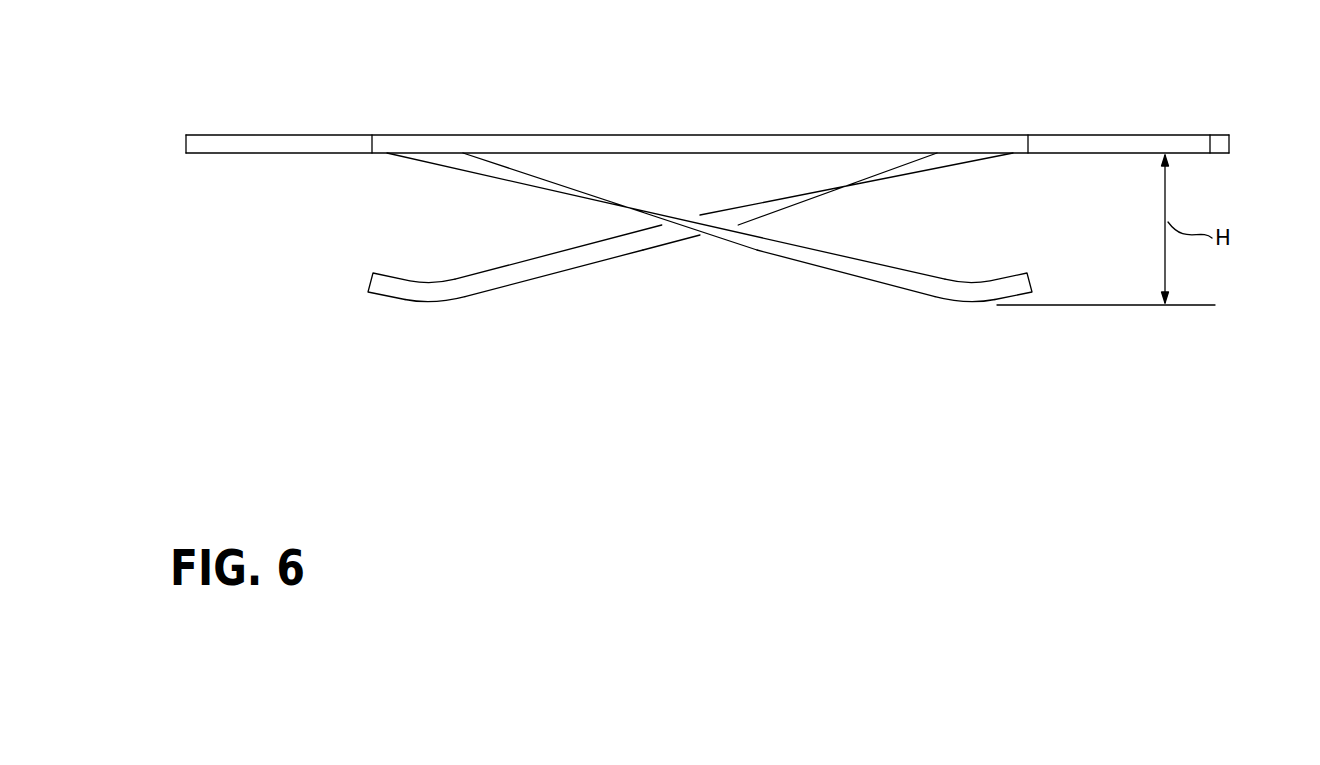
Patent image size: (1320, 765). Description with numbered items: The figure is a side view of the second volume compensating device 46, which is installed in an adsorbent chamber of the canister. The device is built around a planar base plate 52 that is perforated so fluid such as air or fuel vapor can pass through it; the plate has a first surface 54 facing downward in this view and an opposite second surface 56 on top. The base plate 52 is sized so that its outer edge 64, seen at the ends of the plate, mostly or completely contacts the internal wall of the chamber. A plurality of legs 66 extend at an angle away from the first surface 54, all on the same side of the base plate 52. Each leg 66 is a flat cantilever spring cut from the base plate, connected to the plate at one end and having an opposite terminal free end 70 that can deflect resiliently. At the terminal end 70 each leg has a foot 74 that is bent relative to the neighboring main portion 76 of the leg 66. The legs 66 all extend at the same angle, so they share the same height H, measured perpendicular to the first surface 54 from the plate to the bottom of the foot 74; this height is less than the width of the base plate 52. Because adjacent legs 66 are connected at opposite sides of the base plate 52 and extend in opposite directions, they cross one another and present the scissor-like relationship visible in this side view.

The second volume compensating device 46 is at (736, 95).
The base plate 52 is at (184, 143).
The first surface 54 is at (253, 155).
The second surface 56 is at (268, 133).
The outer edge 64 is at (1231, 143).
The legs 66 is at (517, 262).
The terminal free end 70 is at (368, 283).
The foot 74 is at (434, 304).
The main portion 76 is at (623, 256).